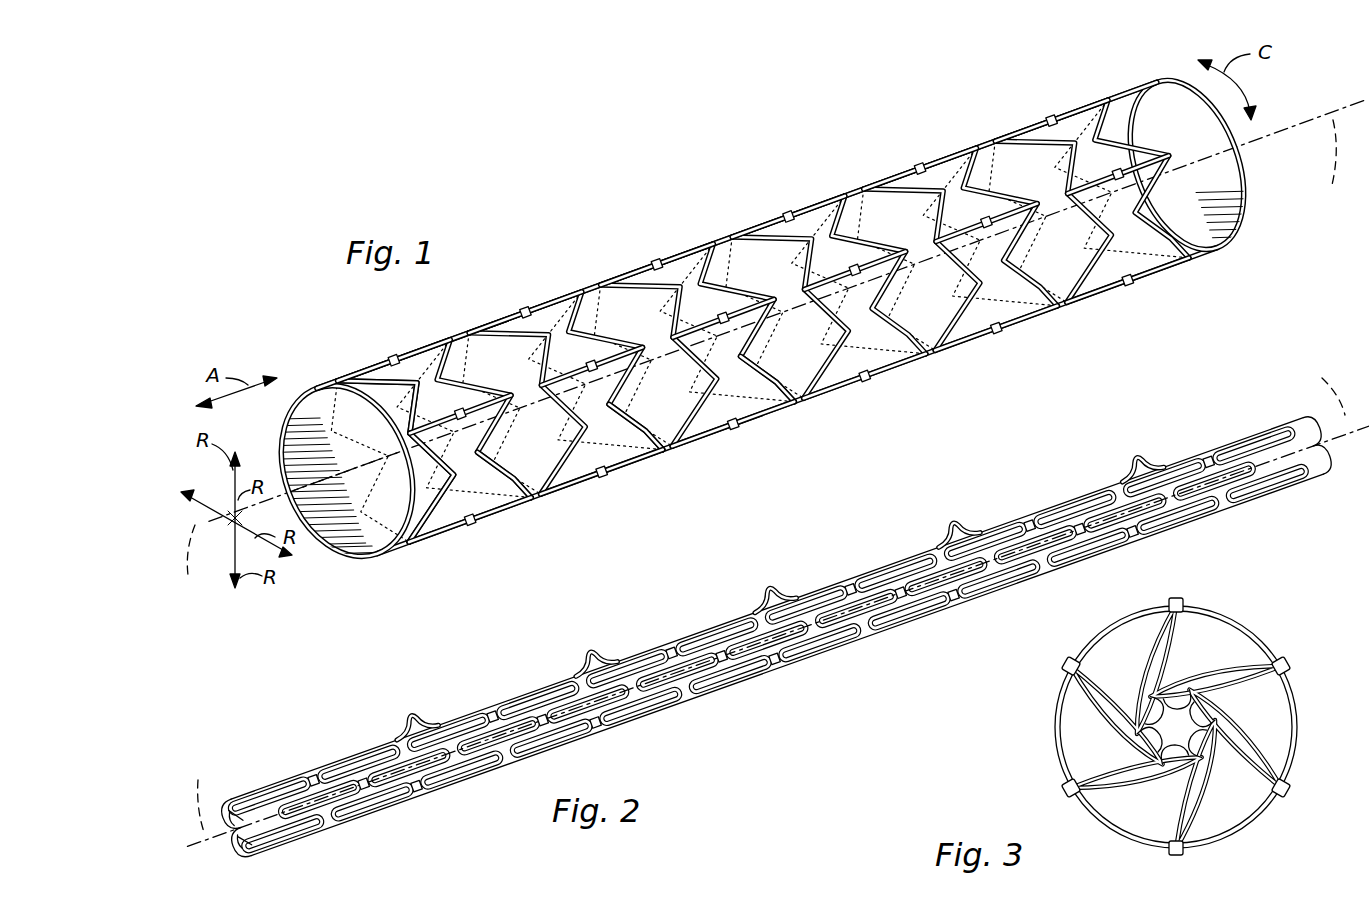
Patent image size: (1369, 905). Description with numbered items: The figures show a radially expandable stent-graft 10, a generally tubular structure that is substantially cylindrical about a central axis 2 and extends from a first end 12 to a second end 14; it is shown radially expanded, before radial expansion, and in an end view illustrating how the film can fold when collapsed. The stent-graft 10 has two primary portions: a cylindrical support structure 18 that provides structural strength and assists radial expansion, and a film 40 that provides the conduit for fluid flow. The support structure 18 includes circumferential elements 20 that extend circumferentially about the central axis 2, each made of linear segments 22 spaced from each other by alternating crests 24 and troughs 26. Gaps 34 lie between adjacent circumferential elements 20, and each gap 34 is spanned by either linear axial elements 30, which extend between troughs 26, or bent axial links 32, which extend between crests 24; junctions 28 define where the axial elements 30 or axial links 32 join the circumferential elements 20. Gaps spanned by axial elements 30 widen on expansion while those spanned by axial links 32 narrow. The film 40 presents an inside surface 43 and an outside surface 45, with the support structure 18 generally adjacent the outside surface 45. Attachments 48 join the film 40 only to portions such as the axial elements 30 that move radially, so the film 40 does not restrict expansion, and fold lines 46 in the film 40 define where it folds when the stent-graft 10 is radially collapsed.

In FIG. 1, the stent-graft 10 is at (628, 150).
In FIG. 2, the stent-graft 10 is at (730, 585).
In FIG. 3, the stent-graft 10 is at (1035, 689).
In FIG. 1, the first end 12 is at (284, 440).
In FIG. 2, the first end 12 is at (246, 848).
In FIG. 1, the second end 14 is at (1167, 80).
In FIG. 2, the second end 14 is at (1300, 420).
In FIG. 1, the cylindrical support structure 18 is at (931, 132).
In FIG. 1, the circumferential elements 20 is at (736, 243).
In FIG. 2, the circumferential elements 20 is at (541, 690).
In FIG. 3, the circumferential elements 20 is at (1098, 628).
In FIG. 1, the linear segments 22 is at (361, 370).
In FIG. 1, the crests 24 is at (416, 385).
In FIG. 1, the troughs 26 is at (424, 432).
In FIG. 1, the junctions 28 is at (400, 490).
In FIG. 1, the axial elements 30 is at (882, 175).
In FIG. 2, the axial elements 30 is at (471, 735).
In FIG. 1, the axial links 32 is at (556, 446).
In FIG. 1, the gaps 34 is at (784, 331).
In FIG. 1, the film 40 is at (470, 345).
In FIG. 2, the film 40 is at (441, 778).
In FIG. 3, the film 40 is at (1245, 725).
In FIG. 1, the inside surface 43 is at (335, 463).
In FIG. 1, the outside surface 45 is at (1238, 208).
In FIG. 1, the fold lines 46 is at (1141, 127).
In FIG. 3, the fold lines 46 is at (1205, 722).
In FIG. 1, the attachments 48 is at (536, 300).
In FIG. 3, the attachments 48 is at (1178, 597).
In FIG. 1, the central axis 2 is at (760, 361).
In FIG. 2, the central axis 2 is at (771, 591).